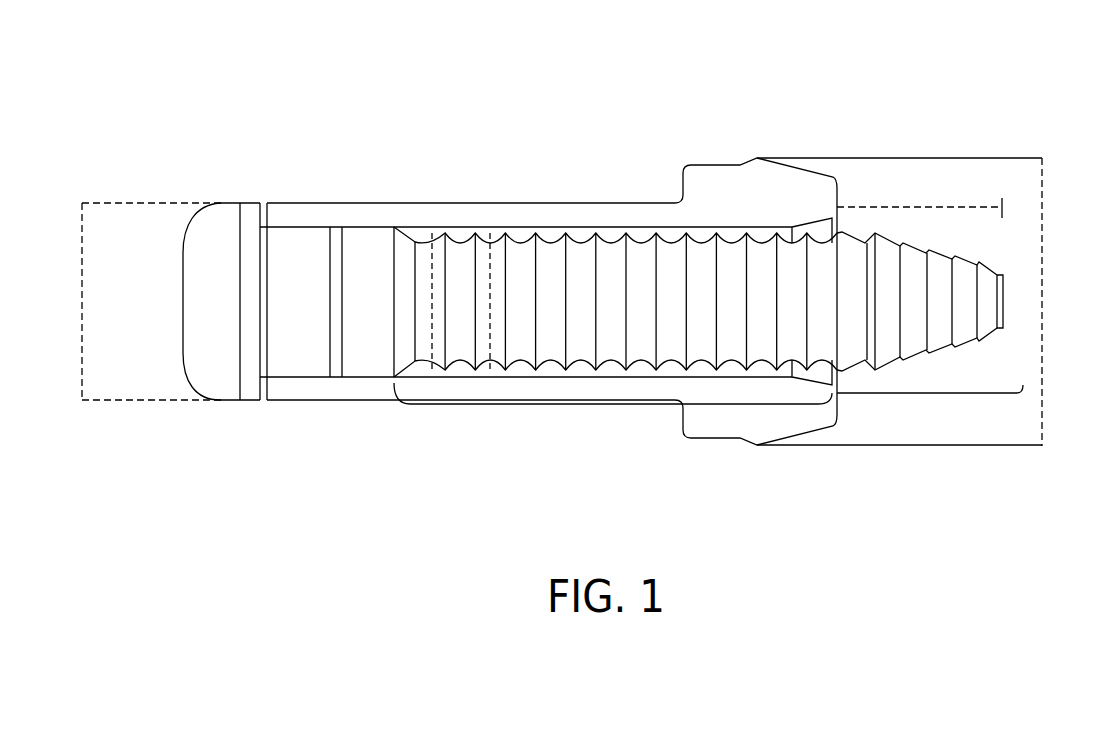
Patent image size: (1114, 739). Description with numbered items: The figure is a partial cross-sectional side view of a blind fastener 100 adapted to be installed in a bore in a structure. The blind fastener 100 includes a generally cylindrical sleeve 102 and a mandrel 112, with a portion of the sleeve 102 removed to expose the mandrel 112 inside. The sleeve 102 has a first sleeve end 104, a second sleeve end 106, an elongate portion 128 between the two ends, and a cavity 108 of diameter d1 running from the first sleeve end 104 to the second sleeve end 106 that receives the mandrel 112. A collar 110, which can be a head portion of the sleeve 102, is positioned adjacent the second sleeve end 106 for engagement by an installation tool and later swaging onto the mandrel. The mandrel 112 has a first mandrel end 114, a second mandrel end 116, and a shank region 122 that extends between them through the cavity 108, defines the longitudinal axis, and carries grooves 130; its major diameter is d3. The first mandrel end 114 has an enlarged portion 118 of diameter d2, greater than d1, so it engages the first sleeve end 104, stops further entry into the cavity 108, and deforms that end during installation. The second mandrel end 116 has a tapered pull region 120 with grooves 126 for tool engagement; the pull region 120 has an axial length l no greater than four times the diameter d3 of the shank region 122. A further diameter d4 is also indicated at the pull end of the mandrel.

The blind fastener 100 is at (370, 106).
The sleeve 102 is at (565, 218).
The first sleeve end 104 is at (307, 218).
The second sleeve end 106 is at (837, 182).
The cavity 108 is at (578, 373).
The collar 110 is at (756, 157).
The mandrel 112 is at (298, 367).
The first mandrel end 114 is at (183, 307).
The second mandrel end 116 is at (1003, 308).
The enlarged portion 118 is at (223, 383).
The pull region 120 is at (928, 395).
The shank region 122 is at (680, 353).
The grooves 126 is at (937, 255).
The elongate portion 128 is at (437, 203).
The grooves 130 is at (617, 406).
The diameter of the cavity d1 is at (432, 285).
The diameter of the enlarged portion d2 is at (84, 307).
The diameter of the shank region d3 is at (490, 350).
The fourth diameter d4 is at (1044, 324).
The axial length of the pull region l is at (943, 220).